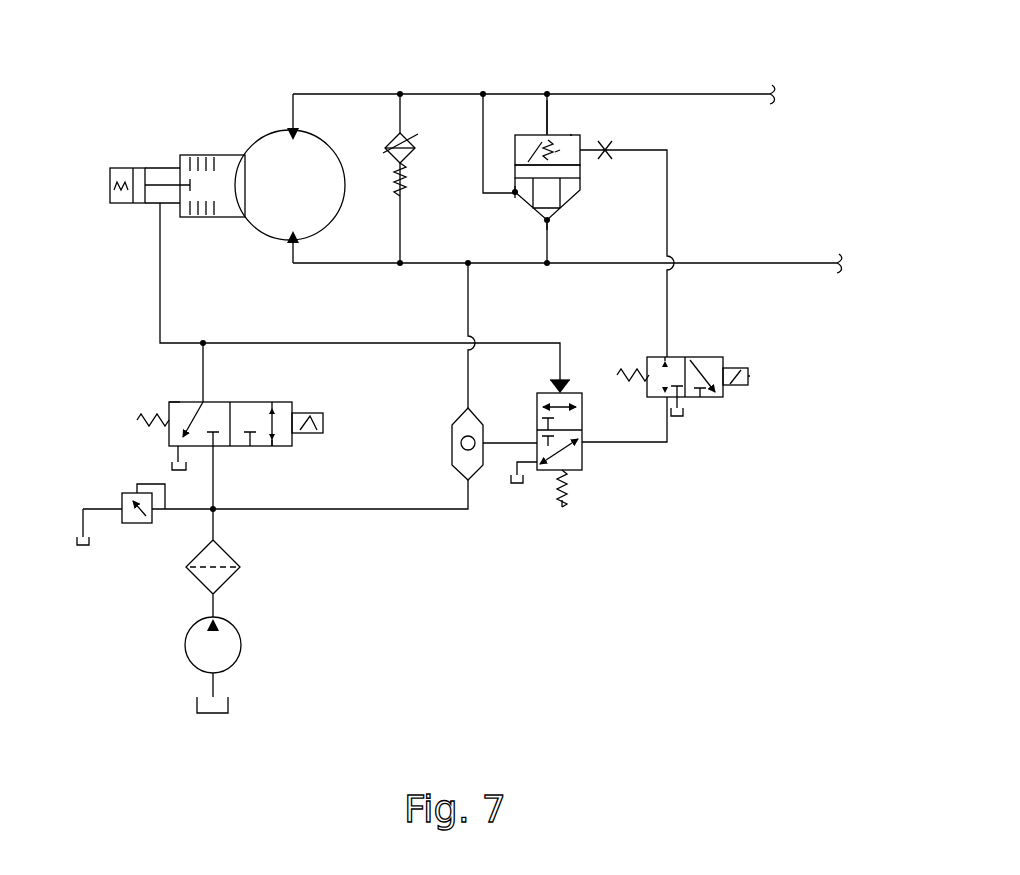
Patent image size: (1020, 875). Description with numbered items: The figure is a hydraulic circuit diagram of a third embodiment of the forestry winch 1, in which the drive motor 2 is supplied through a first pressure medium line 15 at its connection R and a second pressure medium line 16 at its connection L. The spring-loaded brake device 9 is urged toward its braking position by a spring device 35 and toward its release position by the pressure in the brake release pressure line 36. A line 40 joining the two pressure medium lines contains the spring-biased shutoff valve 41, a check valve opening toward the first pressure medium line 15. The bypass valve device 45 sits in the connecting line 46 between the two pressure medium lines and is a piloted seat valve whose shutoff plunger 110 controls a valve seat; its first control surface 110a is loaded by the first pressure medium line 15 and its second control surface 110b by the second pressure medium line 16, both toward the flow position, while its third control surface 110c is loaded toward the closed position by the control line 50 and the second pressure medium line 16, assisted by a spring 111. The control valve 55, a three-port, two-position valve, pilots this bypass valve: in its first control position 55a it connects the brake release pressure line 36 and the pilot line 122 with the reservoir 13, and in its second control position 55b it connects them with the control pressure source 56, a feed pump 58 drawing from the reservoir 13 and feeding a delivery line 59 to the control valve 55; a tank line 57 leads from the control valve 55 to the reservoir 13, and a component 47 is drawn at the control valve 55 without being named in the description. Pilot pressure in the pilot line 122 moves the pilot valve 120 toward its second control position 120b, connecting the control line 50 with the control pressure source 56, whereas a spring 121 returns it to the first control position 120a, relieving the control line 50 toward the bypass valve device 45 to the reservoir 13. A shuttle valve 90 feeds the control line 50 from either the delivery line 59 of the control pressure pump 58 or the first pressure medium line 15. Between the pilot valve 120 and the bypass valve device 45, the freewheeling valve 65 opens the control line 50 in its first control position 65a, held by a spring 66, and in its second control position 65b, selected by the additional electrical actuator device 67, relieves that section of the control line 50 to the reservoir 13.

The forestry winch 1 is at (803, 122).
The drive motor 2 is at (280, 148).
The brake device 9 is at (202, 150).
The reservoir 13 is at (198, 713).
The first pressure medium line 15 is at (786, 263).
The second pressure medium line 16 is at (716, 94).
The spring device 35 is at (112, 186).
The brake release pressure line 36 is at (156, 272).
The line 40 is at (396, 105).
The spring-biased shutoff valve 41 is at (393, 140).
The bypass valve device 45 is at (571, 134).
The connecting line 46 is at (478, 150).
The actuating element 47 is at (318, 418).
The control line 50 is at (672, 222).
The control valve 55 is at (285, 394).
The first control position 55a is at (170, 403).
The second control position 55b is at (279, 448).
The control pressure source 56 is at (268, 657).
The tank line 57 is at (170, 456).
The feed pump 58 is at (226, 641).
The delivery line 59 is at (208, 523).
The freewheeling valve 65 is at (703, 346).
The first control position 65a is at (668, 358).
The second control position 65b is at (716, 353).
The spring 66 is at (622, 381).
The additional electrical actuator device 67 is at (750, 376).
The shuttle valve 90 is at (452, 443).
The shutoff plunger 110 is at (515, 140).
The first control surface 110a is at (550, 214).
The second control surface 110b is at (515, 196).
The third control surface 110c is at (545, 150).
The spring 111 is at (561, 148).
The pilot valve 120 is at (566, 522).
The first control position 120a is at (577, 502).
The second control position 120b is at (573, 384).
The spring 121 is at (562, 509).
The pilot line 122 is at (508, 343).